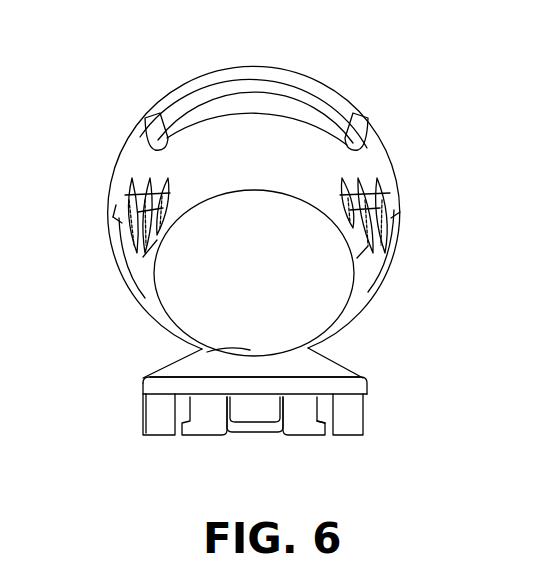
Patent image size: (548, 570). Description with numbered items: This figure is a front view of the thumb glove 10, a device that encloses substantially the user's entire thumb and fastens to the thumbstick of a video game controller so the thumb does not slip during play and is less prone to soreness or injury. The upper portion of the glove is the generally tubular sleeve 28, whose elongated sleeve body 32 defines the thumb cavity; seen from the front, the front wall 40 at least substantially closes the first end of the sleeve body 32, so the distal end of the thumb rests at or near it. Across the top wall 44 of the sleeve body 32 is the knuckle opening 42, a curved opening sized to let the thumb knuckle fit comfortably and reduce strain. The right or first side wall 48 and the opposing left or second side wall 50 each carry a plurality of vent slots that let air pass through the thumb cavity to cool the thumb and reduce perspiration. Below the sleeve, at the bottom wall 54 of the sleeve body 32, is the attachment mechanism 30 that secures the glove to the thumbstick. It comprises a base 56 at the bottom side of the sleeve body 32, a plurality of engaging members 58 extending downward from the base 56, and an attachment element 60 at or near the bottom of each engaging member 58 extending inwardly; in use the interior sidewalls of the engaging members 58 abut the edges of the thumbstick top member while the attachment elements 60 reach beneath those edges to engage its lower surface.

The thumb glove 10 is at (347, 78).
The tubular sleeve 28 is at (147, 163).
The attachment mechanism 30 is at (380, 418).
The sleeve body 32 is at (325, 163).
The front wall 40 is at (195, 280).
The knuckle opening 42 is at (260, 107).
The top wall 44 is at (377, 97).
The first side wall 48 is at (108, 222).
The second side wall 50 is at (407, 237).
The bottom wall 54 is at (338, 354).
The base 56 is at (200, 366).
The engaging members 58 is at (157, 418).
The attachment element 60 is at (318, 430).